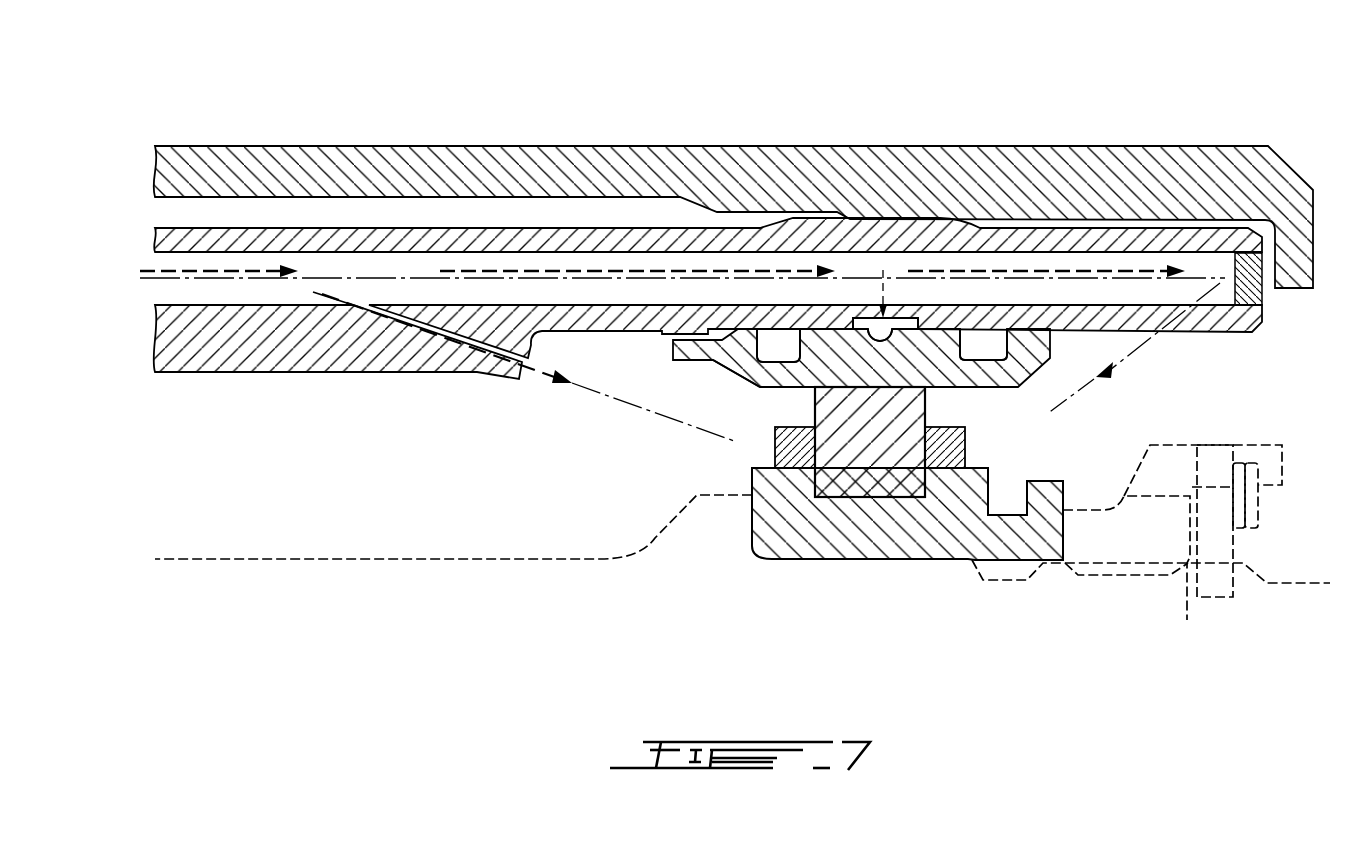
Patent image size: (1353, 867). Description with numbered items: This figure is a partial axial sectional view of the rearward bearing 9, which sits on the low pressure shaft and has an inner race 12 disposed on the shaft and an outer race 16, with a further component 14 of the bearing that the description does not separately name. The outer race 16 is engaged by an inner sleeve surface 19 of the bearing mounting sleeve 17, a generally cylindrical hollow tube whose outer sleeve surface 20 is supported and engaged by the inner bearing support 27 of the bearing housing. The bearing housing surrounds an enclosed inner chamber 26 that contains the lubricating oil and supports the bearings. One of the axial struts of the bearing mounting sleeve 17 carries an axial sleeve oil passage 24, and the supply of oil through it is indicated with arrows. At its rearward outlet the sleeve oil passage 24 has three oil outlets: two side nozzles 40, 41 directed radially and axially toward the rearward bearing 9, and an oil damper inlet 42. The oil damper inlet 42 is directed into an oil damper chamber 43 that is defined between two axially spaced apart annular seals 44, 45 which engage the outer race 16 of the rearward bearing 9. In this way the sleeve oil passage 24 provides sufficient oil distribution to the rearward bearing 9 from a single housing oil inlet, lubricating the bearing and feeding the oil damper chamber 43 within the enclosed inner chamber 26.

The rearward bearing 9 is at (858, 381).
The inner race 12 is at (835, 523).
The piston block 14 is at (877, 440).
The outer race 16 is at (750, 380).
The bearing mounting sleeve 17 is at (292, 347).
The inner sleeve surface 19 is at (608, 330).
The outer sleeve surface 20 is at (908, 218).
The sleeve oil passage 24 is at (222, 290).
The enclosed inner chamber 26 is at (356, 476).
The inner bearing support 27 is at (258, 165).
The side nozzle 40 is at (472, 350).
The side nozzle 41 is at (1167, 330).
The oil damper inlet 42 is at (877, 313).
The oil damper chamber 43 is at (902, 323).
The annular seal 44 is at (780, 343).
The annular seal 45 is at (983, 343).